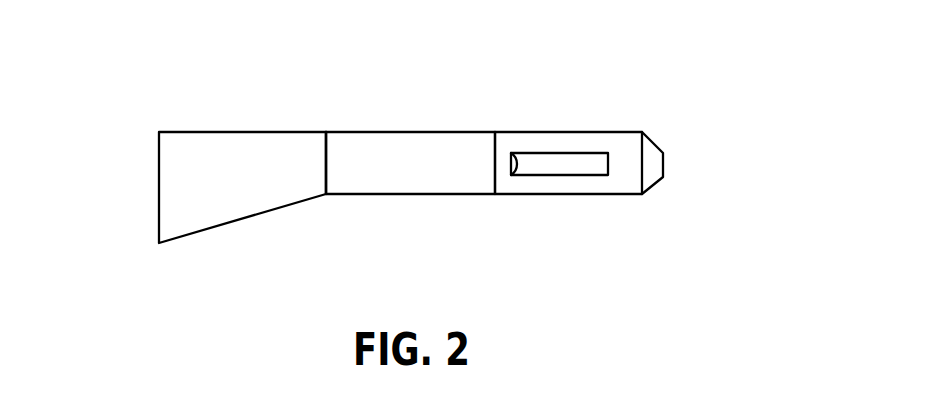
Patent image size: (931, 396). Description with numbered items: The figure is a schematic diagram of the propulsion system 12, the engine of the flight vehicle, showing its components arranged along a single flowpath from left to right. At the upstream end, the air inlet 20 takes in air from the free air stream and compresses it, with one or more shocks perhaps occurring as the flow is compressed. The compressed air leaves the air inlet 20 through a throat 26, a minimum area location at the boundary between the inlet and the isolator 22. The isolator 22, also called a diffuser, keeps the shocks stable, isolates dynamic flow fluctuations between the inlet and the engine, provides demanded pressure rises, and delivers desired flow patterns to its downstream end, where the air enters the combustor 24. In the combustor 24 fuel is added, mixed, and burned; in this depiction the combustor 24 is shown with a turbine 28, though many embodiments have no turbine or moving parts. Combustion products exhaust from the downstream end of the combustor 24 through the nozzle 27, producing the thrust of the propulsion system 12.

The propulsion system 12 is at (192, 107).
The air inlet 20 is at (226, 132).
The isolator 22 is at (468, 163).
The combustor 24 is at (623, 133).
The throat 26 is at (326, 163).
The nozzle 27 is at (650, 163).
The turbine 28 is at (558, 162).